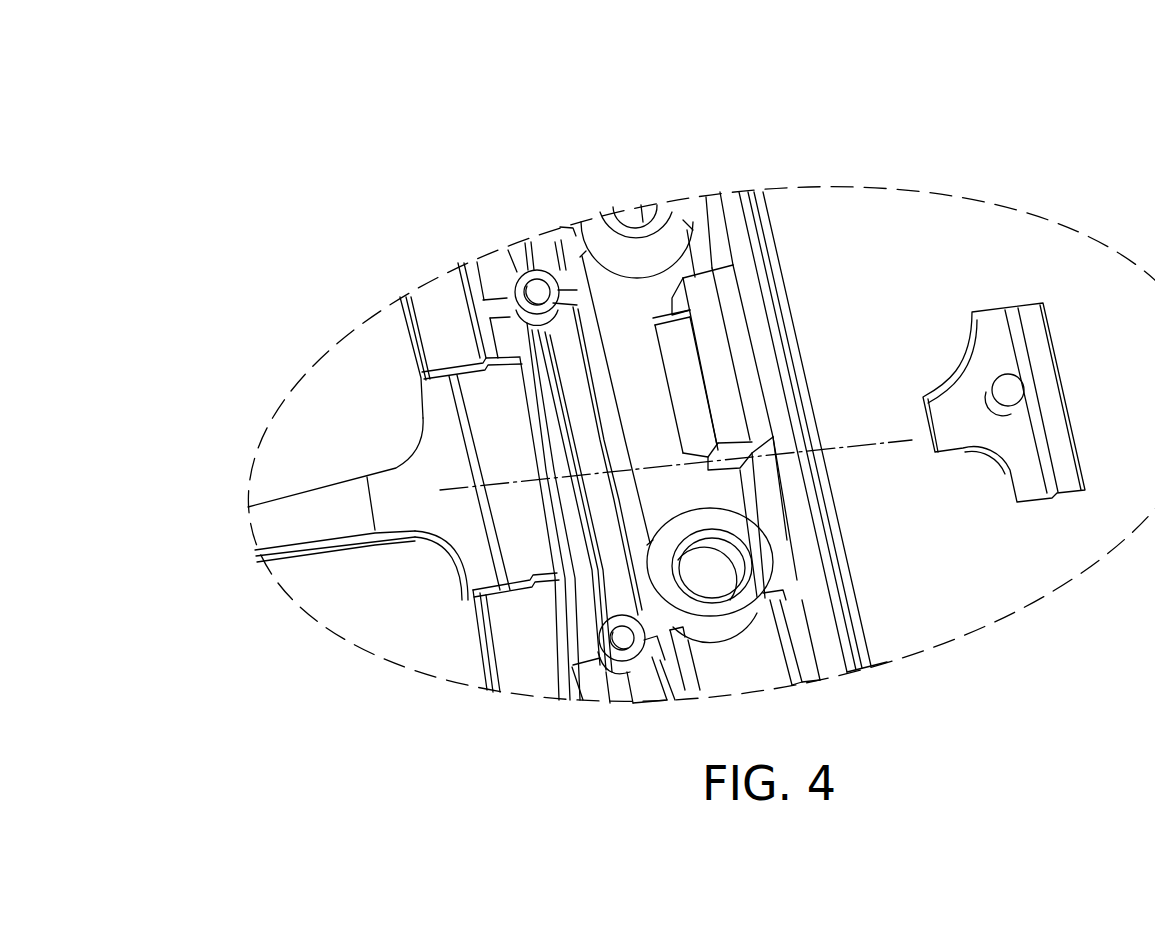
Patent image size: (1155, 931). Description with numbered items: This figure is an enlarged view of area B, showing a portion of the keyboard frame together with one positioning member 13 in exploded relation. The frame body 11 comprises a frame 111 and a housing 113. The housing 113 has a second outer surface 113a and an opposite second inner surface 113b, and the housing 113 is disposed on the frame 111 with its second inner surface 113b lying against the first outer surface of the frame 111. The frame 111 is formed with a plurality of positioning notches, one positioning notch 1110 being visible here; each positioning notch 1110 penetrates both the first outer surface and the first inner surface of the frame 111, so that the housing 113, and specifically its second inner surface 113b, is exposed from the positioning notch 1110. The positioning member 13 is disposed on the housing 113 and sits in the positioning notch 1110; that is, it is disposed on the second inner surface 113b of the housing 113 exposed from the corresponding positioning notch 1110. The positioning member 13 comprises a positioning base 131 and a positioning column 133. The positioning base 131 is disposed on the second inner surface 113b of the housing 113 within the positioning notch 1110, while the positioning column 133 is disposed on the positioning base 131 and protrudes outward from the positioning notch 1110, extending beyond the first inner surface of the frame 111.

The frame body 11 is at (555, 469).
The frame 111 is at (334, 523).
The housing 113 is at (342, 546).
The second outer surface 113a is at (291, 561).
The second inner surface 113b is at (393, 465).
The positioning notch 1110 is at (464, 588).
The positioning member 13 is at (955, 283).
The positioning base 131 is at (990, 332).
The positioning column 133 is at (1003, 390).
The area B is at (1047, 222).